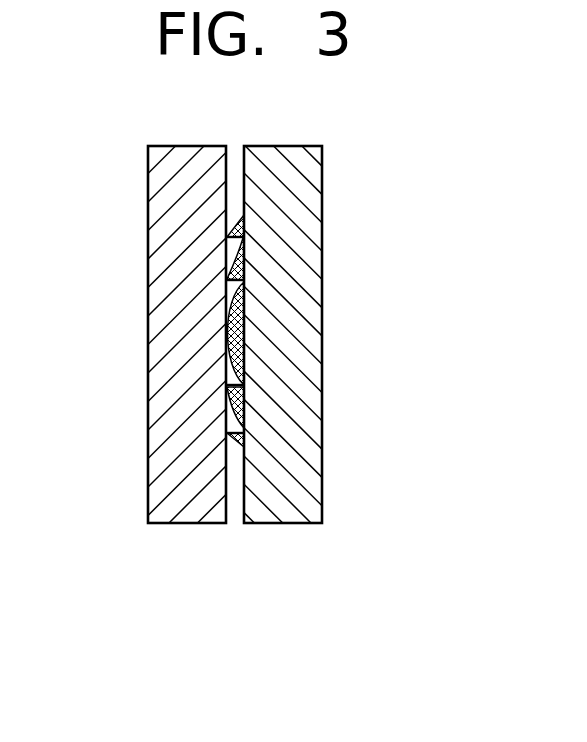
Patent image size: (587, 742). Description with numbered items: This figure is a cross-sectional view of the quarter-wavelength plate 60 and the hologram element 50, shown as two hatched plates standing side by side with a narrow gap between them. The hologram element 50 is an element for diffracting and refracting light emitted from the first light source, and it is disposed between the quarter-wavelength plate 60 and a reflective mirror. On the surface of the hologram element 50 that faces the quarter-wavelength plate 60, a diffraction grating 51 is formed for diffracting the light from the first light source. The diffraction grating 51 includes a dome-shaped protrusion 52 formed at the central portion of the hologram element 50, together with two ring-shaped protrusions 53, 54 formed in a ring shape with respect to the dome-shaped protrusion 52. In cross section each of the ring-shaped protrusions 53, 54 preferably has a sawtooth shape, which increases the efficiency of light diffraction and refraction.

The λ/4 wavelength plate 60 is at (148, 194).
The hologram element 50 is at (314, 182).
The diffraction grating 51 is at (342, 330).
The dome-shaped protrusion 52 is at (243, 321).
The ring-shaped protrusion 53 is at (243, 263).
The ring-shaped protrusion 54 is at (243, 219).